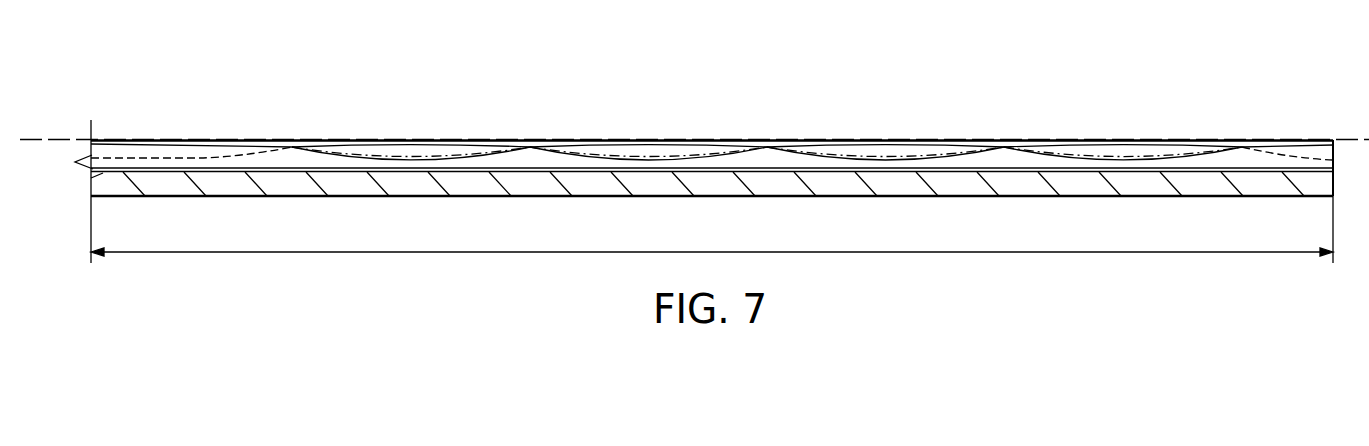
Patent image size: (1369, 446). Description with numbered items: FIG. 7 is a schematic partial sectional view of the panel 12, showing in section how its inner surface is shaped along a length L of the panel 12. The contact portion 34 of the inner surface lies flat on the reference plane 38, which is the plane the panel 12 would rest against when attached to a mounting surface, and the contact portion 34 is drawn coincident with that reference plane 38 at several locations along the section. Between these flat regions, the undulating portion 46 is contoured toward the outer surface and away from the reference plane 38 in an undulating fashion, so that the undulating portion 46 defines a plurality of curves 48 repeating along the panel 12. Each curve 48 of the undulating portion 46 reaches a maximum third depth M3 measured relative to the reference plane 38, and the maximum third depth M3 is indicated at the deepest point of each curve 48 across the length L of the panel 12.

The panel 12 is at (182, 113).
The reference plane 38 is at (62, 139).
The contact portion 34 is at (683, 139).
The curves 48 is at (380, 143).
The undulating portion 46 is at (813, 150).
The maximum third depth M3 is at (411, 218).
The length dimension L is at (712, 229).